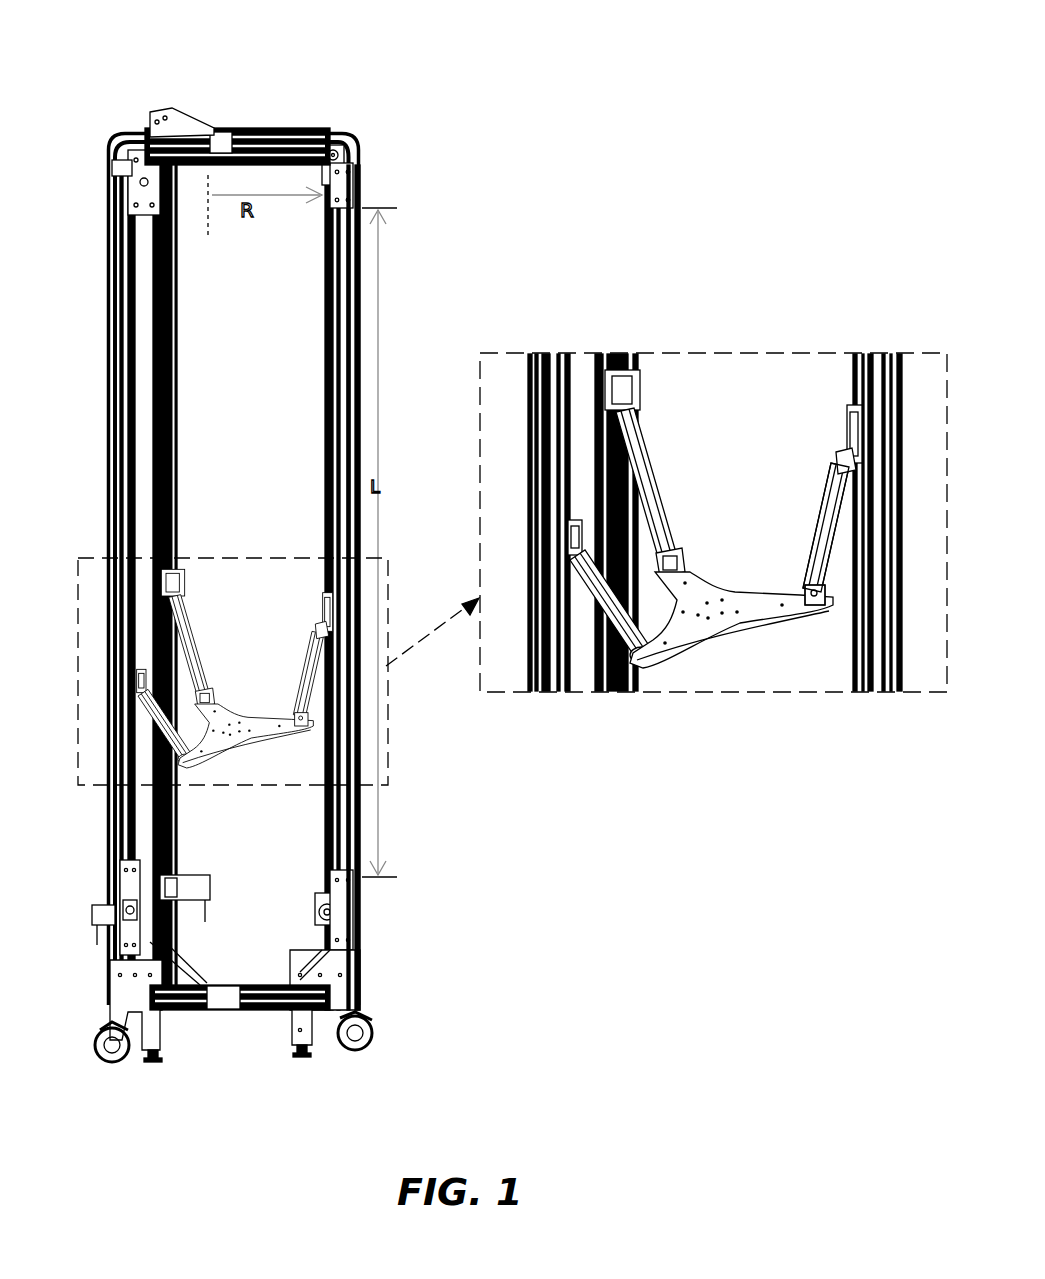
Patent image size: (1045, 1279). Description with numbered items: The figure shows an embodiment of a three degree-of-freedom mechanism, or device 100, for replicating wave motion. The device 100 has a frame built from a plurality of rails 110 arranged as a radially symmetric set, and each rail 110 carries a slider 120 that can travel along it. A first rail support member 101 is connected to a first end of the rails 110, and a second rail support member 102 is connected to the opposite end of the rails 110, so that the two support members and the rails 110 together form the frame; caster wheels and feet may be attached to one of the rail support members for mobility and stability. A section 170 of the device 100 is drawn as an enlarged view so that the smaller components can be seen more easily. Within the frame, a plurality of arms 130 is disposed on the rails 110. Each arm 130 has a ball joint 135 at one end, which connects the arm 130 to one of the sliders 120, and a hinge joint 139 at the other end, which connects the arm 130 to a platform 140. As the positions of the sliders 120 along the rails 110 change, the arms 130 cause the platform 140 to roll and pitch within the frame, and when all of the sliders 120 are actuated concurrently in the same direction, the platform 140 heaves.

The 3DOF mechanism 100 is at (67, 41).
The first rail support member 101 is at (258, 112).
The second rail support member 102 is at (242, 1036).
The rail 110 is at (342, 283).
The slider 120 is at (645, 378).
The arm 130 is at (826, 500).
The ball joint 135 is at (835, 456).
The hinge joint 139 is at (806, 590).
The platform 140 is at (738, 624).
The section 170 is at (747, 320).